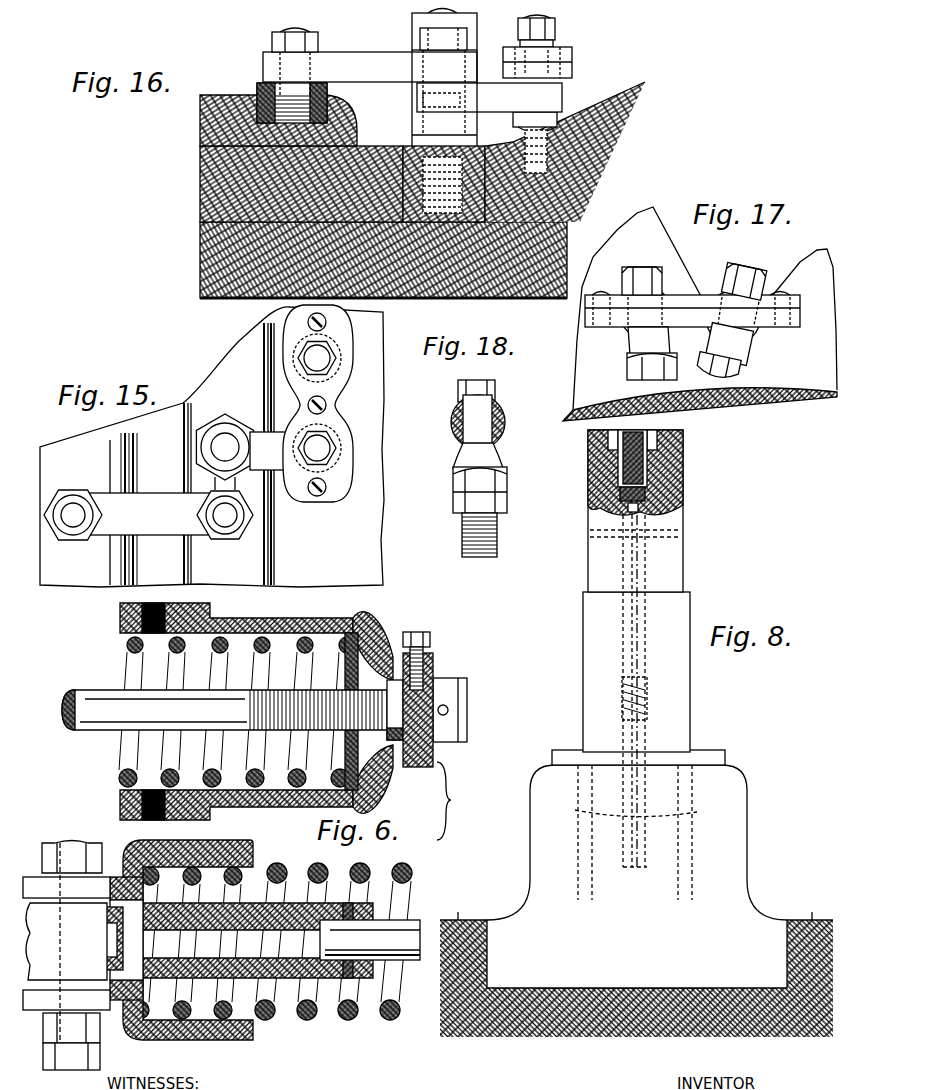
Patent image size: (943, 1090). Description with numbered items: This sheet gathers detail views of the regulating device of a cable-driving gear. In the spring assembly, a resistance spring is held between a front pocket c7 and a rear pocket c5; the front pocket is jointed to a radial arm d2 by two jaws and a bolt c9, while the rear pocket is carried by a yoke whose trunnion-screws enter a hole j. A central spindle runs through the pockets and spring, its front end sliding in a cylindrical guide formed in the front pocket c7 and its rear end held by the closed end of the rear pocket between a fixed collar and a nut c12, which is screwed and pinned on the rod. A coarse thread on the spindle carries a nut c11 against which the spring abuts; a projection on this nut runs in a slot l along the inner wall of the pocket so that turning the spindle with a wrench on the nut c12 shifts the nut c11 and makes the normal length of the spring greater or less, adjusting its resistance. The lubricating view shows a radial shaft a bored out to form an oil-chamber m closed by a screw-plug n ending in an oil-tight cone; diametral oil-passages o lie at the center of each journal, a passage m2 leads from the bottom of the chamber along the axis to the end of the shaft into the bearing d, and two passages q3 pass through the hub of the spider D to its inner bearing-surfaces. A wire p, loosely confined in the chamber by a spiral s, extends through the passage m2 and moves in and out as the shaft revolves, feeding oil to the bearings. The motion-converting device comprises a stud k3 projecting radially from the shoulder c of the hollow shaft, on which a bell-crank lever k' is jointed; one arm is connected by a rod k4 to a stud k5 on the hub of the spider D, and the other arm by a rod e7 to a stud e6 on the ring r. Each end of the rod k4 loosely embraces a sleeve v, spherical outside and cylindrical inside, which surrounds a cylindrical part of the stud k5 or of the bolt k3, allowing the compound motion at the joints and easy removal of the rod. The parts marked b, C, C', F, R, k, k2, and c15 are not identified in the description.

In FIG. 8, the radial shaft a is at (636, 672).
In FIG. 8, the collar of spindle b is at (713, 758).
In FIG. 8, the shoulder of the hollow shaft c is at (632, 907).
In FIG. 8, the bearing d is at (637, 876).
In FIG. 6, the radial arm d2 is at (83, 956).
In FIG. 8, the cylindrical oil-chamber m is at (642, 507).
In FIG. 8, the oil-passage m2 is at (632, 882).
In FIG. 8, the screw-plug n is at (650, 429).
In FIG. 8, the oil-passages o is at (589, 534).
In FIG. 8, the wire p is at (622, 508).
In FIG. 8, the spiral s is at (650, 705).
In FIG. 8, the oil-passages q3 is at (613, 978).
In FIG. 16, the bed casting C is at (444, 184).
In FIG. 15, the bed casting C is at (201, 494).
In FIG. 16, the foundation casting C' is at (404, 260).
In FIG. 17, the foundation casting C' is at (705, 308).
In FIG. 8, the foundation casting C' is at (625, 981).
In FIG. 16, the spider D is at (565, 152).
In FIG. 17, the spider D is at (700, 404).
In FIG. 15, the spider D is at (299, 454).
In FIG. 8, the spider D is at (636, 978).
In FIG. 16, the frame block F is at (289, 184).
In FIG. 16, the bracket R is at (289, 107).
In FIG. 16, the ring r is at (282, 96).
In FIG. 15, the ring r is at (212, 447).
In FIG. 16, the stud e6 is at (309, 33).
In FIG. 15, the stud e6 is at (82, 503).
In FIG. 16, the rod e7 is at (370, 67).
In FIG. 15, the rod e7 is at (149, 514).
In FIG. 15, the hole j is at (145, 519).
In FIG. 6, the hole j is at (108, 805).
In FIG. 6, the slot l is at (369, 700).
In FIG. 16, the nut k is at (456, 30).
In FIG. 15, the nut k is at (226, 531).
In FIG. 16, the bell-crank lever k' is at (489, 97).
In FIG. 15, the bell-crank lever k' is at (271, 471).
In FIG. 16, the post k2 is at (453, 128).
In FIG. 15, the post k2 is at (224, 447).
In FIG. 16, the stud k3 is at (524, 158).
In FIG. 17, the stud k3 is at (737, 348).
In FIG. 15, the stud k3 is at (336, 447).
In FIG. 16, the rod k4 is at (572, 53).
In FIG. 17, the rod k4 is at (707, 297).
In FIG. 15, the rod k4 is at (347, 403).
In FIG. 17, the stud k5 is at (643, 368).
In FIG. 15, the stud k5 is at (325, 355).
In FIG. 18, the stud k5 is at (477, 483).
In FIG. 18, the sleeve v is at (505, 421).
In FIG. 6, the rear pocket c5 is at (284, 817).
In FIG. 6, the front pocket c7 is at (200, 1040).
In FIG. 6, the bolt c9 is at (70, 1074).
In FIG. 6, the nut c11 is at (379, 645).
In FIG. 6, the nut c12 is at (447, 742).
In FIG. 6, the set screw c15 is at (432, 640).